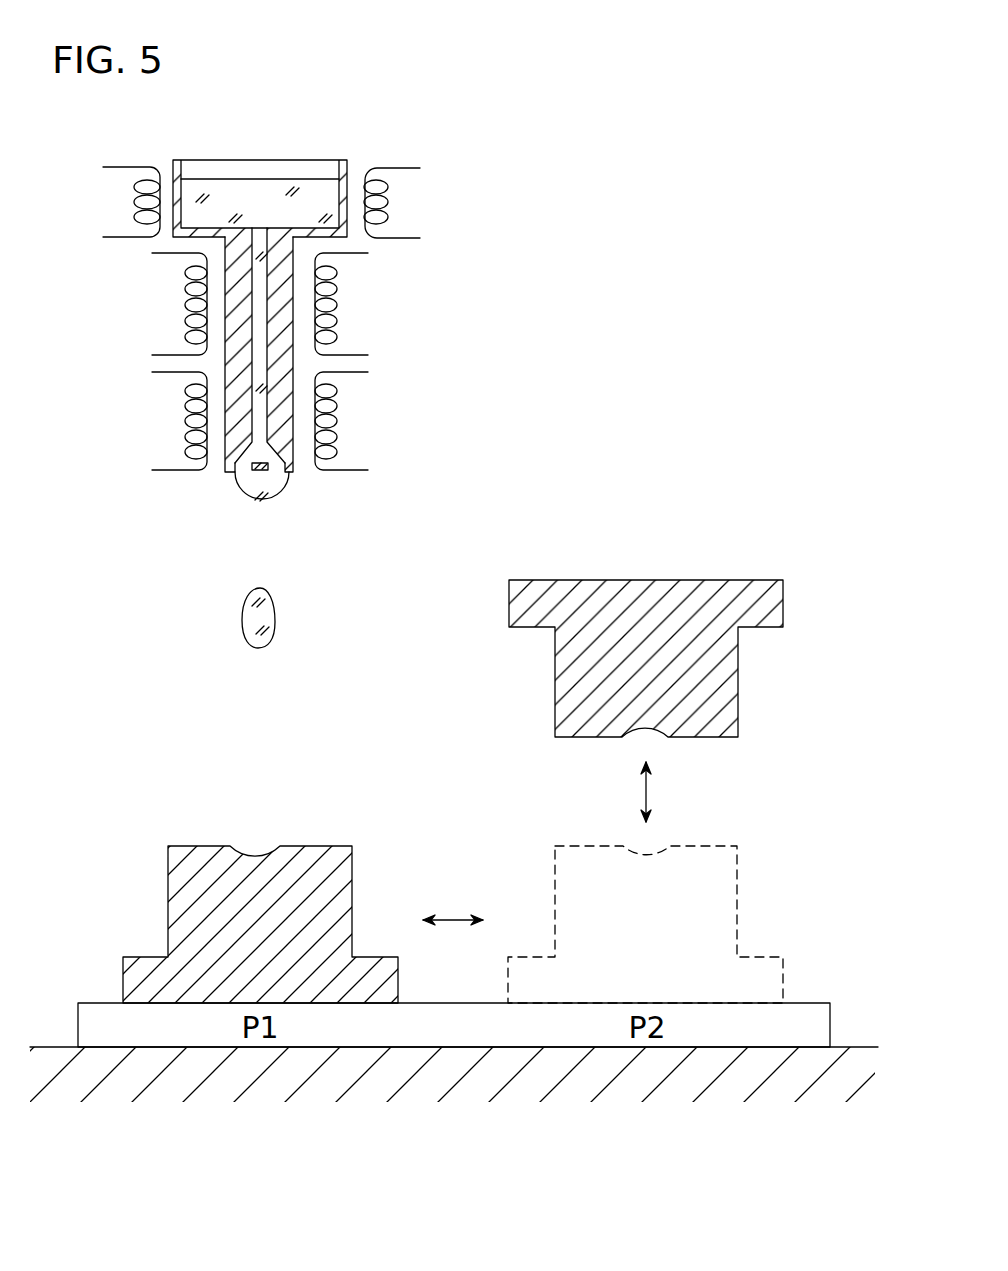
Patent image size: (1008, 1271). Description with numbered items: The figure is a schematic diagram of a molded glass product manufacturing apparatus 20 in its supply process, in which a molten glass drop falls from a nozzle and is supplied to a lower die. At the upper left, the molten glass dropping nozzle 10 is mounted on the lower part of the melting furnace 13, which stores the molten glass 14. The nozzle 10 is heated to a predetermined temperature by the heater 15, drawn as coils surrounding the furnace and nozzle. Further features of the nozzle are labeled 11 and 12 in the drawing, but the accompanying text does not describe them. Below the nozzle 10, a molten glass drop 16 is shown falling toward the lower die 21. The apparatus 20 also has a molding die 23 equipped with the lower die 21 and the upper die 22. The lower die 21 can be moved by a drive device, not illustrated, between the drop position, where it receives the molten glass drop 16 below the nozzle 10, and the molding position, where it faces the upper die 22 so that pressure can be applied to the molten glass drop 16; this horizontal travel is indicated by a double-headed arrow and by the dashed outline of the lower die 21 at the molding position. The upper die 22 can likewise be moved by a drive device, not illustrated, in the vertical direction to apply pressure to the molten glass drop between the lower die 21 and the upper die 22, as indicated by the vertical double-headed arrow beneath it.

The molten glass dropping nozzle 10 is at (287, 365).
The flow path of nozzle 11 is at (260, 357).
The molten glass drop forming at nozzle tip 12 is at (247, 465).
The melting furnace 13 is at (341, 165).
The molten glass 14 is at (243, 193).
The heater 15 is at (174, 301).
The molten glass drop 16 is at (268, 610).
The molded glass product manufacturing apparatus 20 is at (611, 258).
The lower die 21 is at (180, 908).
The upper die 22 is at (726, 674).
The molding die 23 is at (693, 565).